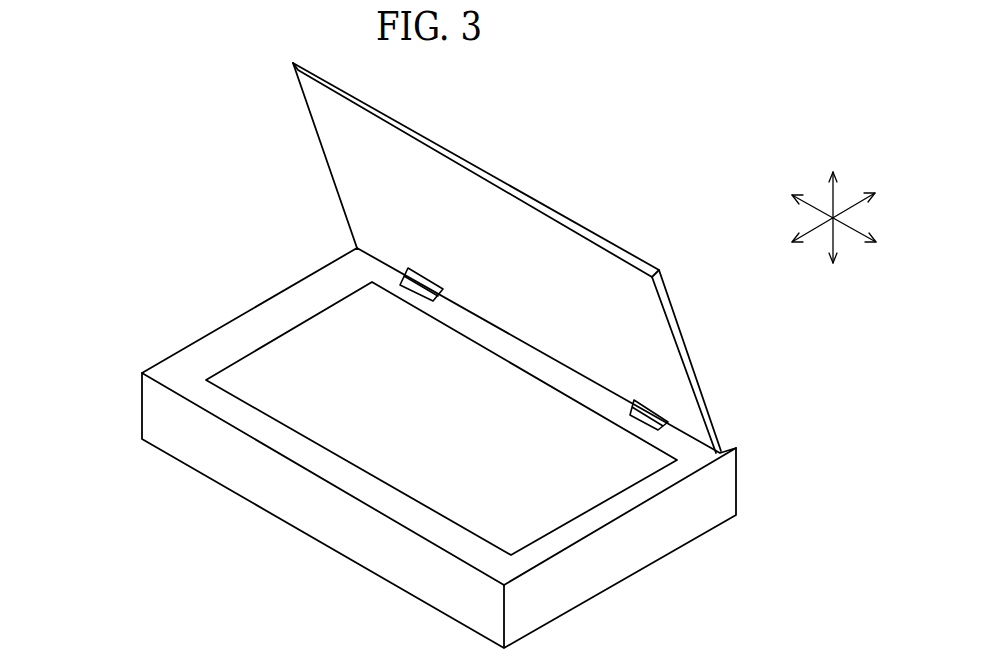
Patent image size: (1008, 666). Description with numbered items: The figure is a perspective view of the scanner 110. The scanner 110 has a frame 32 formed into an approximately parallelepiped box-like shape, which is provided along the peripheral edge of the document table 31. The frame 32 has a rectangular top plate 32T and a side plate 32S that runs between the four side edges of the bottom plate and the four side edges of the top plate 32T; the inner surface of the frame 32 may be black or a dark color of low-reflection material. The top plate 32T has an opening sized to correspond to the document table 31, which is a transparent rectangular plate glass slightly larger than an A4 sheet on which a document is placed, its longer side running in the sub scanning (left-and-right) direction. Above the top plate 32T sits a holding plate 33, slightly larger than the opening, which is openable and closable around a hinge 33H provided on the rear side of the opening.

The scanner 110 is at (663, 160).
The document table 31 is at (297, 343).
The frame 32 is at (745, 498).
The top plate 32T is at (210, 347).
The side plate 32S is at (152, 423).
The holding plate 33 is at (697, 368).
The hinge 33H is at (400, 285).